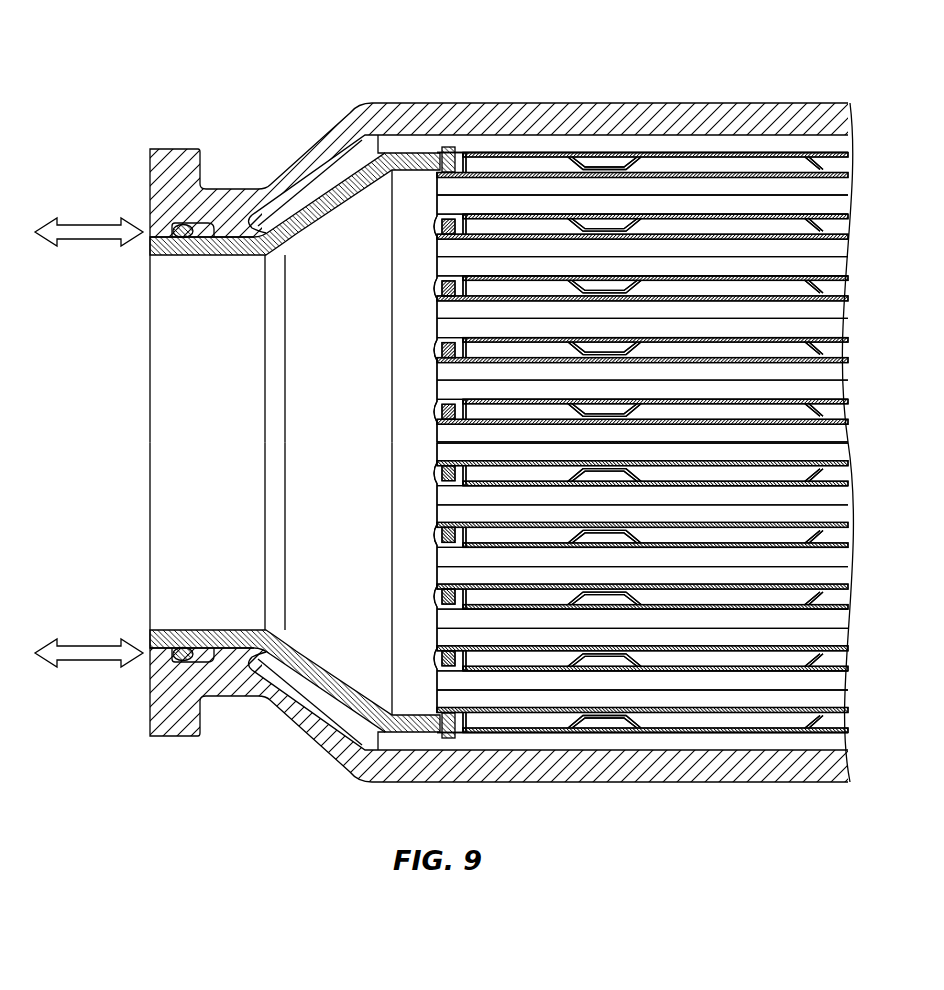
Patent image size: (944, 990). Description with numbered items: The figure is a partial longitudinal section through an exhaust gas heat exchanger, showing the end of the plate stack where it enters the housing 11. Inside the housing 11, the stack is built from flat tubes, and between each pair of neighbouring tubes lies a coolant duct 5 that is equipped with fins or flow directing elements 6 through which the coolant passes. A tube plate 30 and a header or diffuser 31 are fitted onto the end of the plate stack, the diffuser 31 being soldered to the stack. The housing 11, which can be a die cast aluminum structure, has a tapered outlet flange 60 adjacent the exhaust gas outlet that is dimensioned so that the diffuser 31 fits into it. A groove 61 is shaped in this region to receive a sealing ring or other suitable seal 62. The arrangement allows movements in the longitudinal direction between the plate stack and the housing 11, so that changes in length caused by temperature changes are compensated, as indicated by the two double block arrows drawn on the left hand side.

The coolant duct 5 is at (688, 235).
The flow directing element 6 is at (641, 443).
The housing 11 is at (707, 118).
The tube plate 30 is at (450, 150).
The diffuser 31 is at (352, 178).
The tapered outlet flange 60 is at (162, 167).
The groove 61 is at (223, 217).
The seal 62 is at (187, 220).